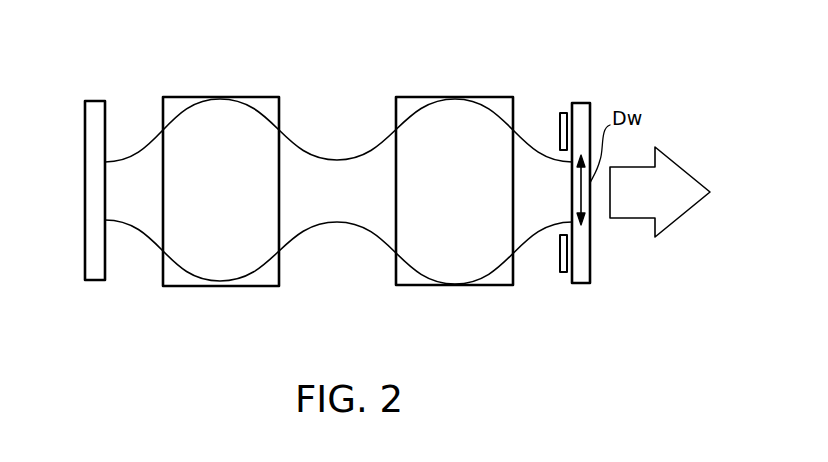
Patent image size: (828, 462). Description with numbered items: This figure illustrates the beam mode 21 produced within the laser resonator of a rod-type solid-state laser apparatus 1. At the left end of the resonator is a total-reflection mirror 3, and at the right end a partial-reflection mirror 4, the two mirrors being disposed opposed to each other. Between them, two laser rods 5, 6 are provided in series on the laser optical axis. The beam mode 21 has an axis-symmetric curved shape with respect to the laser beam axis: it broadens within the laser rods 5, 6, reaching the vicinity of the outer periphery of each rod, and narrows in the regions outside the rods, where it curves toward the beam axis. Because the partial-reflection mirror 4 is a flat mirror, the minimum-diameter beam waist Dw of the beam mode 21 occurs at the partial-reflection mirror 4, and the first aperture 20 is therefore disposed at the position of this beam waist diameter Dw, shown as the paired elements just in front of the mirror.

The solid-state laser apparatus 1 is at (572, 75).
The total-reflection mirror 3 is at (93, 273).
The partial-reflection mirror 4 is at (580, 273).
The laser rod 5 is at (182, 250).
The laser rod 6 is at (417, 252).
The first aperture 20 is at (560, 272).
The beam mode 21 is at (360, 155).